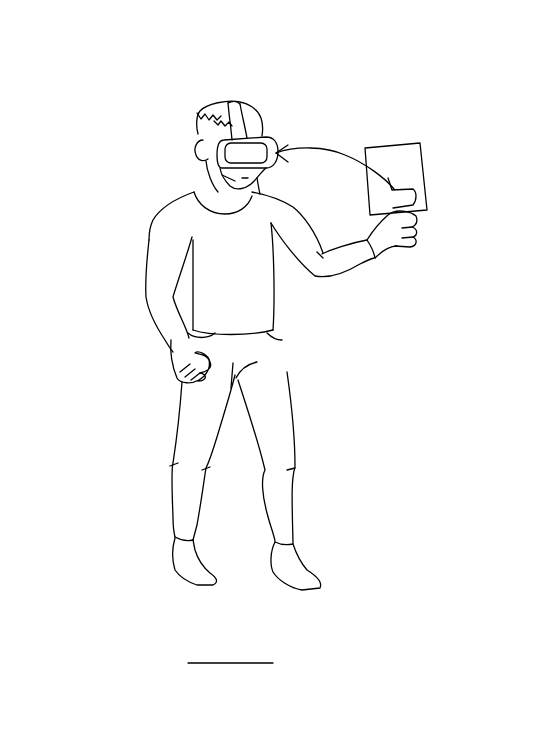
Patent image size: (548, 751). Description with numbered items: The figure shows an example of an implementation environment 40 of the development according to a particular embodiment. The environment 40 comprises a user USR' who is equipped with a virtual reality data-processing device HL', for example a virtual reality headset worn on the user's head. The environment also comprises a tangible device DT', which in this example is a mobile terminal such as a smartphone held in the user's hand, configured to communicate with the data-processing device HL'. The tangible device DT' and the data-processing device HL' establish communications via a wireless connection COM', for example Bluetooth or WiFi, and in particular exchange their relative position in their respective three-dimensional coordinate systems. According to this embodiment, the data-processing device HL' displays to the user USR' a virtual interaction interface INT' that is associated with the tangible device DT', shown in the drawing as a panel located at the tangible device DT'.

The implementation environment 40 is at (151, 138).
The virtual reality data-processing device HL' is at (275, 97).
The virtual interaction interface INT' is at (408, 120).
The wireless connection COM' is at (335, 155).
The user USR' is at (203, 345).
The tangible device DT' is at (399, 263).